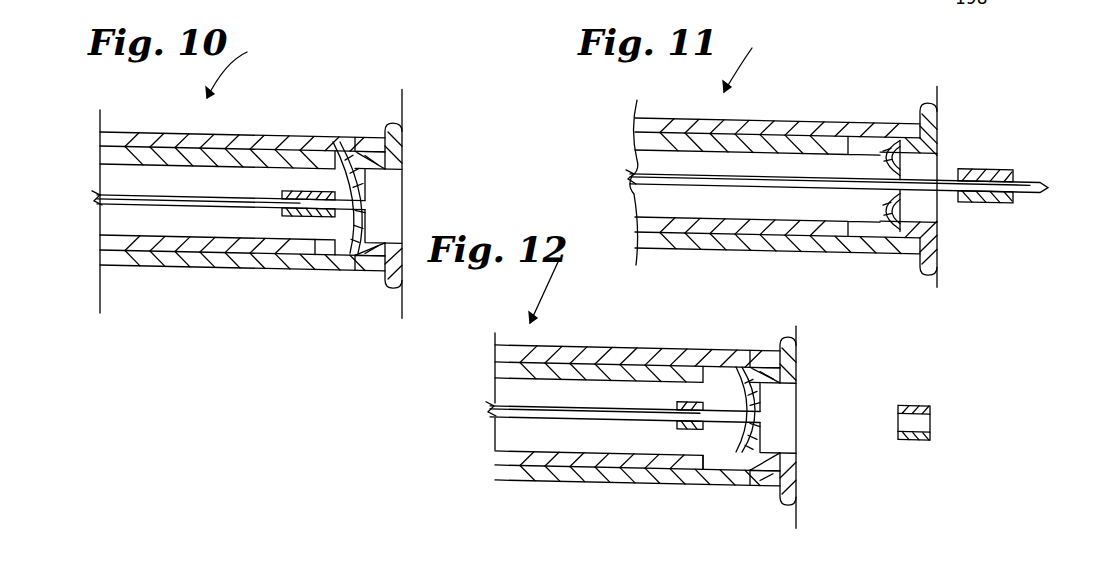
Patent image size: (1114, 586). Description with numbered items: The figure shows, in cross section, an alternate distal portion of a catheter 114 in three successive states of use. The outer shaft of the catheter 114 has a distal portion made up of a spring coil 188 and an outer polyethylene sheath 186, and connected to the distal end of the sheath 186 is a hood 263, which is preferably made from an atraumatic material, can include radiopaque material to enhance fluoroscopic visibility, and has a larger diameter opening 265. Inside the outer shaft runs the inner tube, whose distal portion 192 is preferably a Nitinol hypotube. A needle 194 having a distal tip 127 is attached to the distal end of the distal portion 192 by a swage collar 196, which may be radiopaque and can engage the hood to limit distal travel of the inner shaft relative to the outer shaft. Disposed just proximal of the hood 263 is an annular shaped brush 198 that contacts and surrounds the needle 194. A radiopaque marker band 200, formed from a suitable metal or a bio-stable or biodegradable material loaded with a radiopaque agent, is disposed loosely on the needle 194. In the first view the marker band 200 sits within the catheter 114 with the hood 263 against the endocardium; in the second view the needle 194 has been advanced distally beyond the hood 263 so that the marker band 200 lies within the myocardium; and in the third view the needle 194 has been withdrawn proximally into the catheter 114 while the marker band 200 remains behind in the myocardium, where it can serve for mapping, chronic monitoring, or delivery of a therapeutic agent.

In FIG. 10, the catheter 114 is at (247, 52).
In FIG. 11, the catheter 114 is at (752, 48).
In FIG. 12, the catheter 114 is at (558, 262).
In FIG. 10, the distal tip 127 is at (352, 275).
In FIG. 11, the distal tip 127 is at (1046, 184).
In FIG. 12, the distal tip 127 is at (735, 490).
In FIG. 10, the outer polyethylene sheath 186 is at (271, 140).
In FIG. 11, the outer polyethylene sheath 186 is at (790, 128).
In FIG. 12, the outer polyethylene sheath 186 is at (622, 357).
In FIG. 10, the spring coil 188 is at (203, 135).
In FIG. 11, the spring coil 188 is at (718, 127).
In FIG. 12, the spring coil 188 is at (530, 350).
In FIG. 10, the distal portion 192 is at (142, 185).
In FIG. 11, the distal portion 192 is at (667, 175).
In FIG. 10, the needle 194 is at (350, 150).
In FIG. 11, the needle 194 is at (1020, 202).
In FIG. 12, the needle 194 is at (745, 380).
In FIG. 10, the swage collar 196 is at (282, 210).
In FIG. 11, the swage collar 196 is at (965, 205).
In FIG. 10, the annular shaped brush 198 is at (316, 252).
In FIG. 11, the annular shaped brush 198 is at (873, 207).
In FIG. 12, the annular shaped brush 198 is at (712, 477).
In FIG. 10, the radiopaque marker band 200 is at (300, 187).
In FIG. 11, the radiopaque marker band 200 is at (990, 170).
In FIG. 12, the radiopaque marker band 200 is at (777, 536).
In FIG. 10, the hood 263 is at (398, 124).
In FIG. 11, the hood 263 is at (930, 125).
In FIG. 12, the hood 263 is at (790, 352).
In FIG. 10, the opening 265 is at (384, 190).
In FIG. 11, the opening 265 is at (924, 166).
In FIG. 12, the opening 265 is at (782, 412).